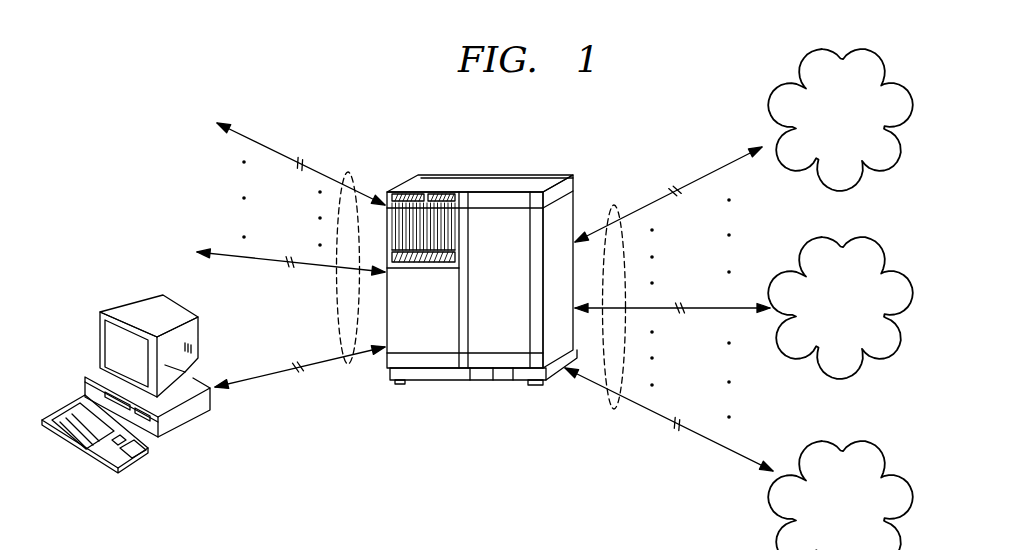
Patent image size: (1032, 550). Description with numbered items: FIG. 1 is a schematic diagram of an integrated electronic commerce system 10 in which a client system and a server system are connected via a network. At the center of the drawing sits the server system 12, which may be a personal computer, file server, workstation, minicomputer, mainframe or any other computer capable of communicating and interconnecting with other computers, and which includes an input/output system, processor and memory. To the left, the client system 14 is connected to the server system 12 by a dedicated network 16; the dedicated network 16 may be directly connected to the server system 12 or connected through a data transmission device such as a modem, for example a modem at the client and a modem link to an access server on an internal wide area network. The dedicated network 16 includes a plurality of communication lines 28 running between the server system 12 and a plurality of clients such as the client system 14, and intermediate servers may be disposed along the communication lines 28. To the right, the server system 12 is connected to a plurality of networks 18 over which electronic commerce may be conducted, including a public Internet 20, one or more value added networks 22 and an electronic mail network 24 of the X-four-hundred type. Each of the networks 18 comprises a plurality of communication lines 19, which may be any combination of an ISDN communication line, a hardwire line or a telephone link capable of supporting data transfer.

The integrated electronic commerce system 10 is at (372, 74).
The server system 12 is at (525, 178).
The client system 14 is at (145, 300).
The dedicated network 16 is at (272, 377).
The networks 18 is at (616, 205).
The communication lines 19 is at (716, 171).
The public Internet 20 is at (857, 51).
The value added networks 22 is at (857, 241).
The X.400 electronic mail network 24 is at (857, 442).
The communication lines 28 is at (348, 172).